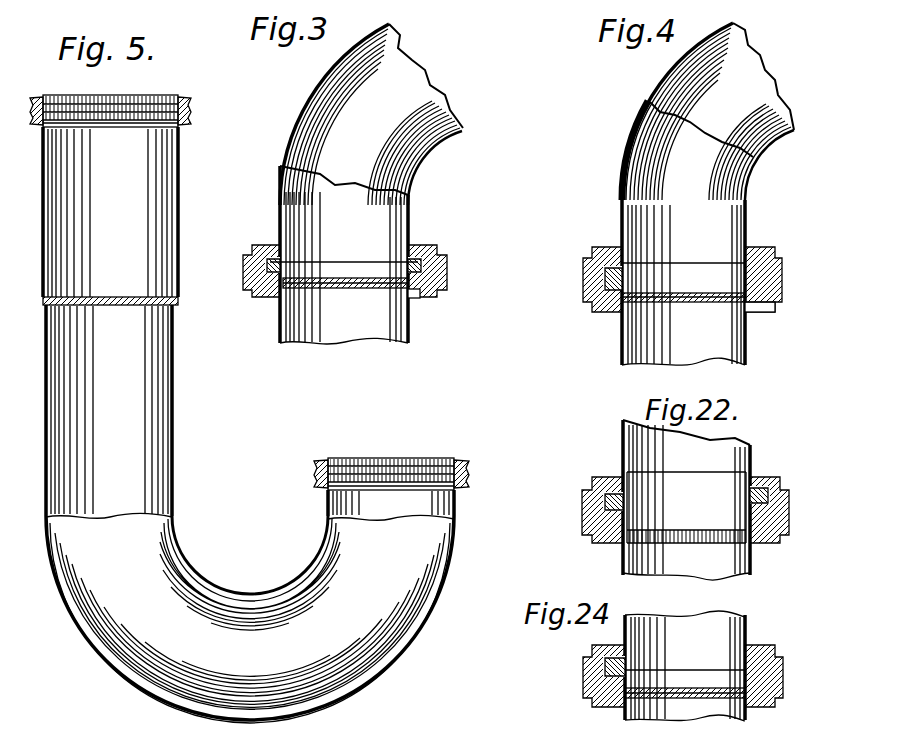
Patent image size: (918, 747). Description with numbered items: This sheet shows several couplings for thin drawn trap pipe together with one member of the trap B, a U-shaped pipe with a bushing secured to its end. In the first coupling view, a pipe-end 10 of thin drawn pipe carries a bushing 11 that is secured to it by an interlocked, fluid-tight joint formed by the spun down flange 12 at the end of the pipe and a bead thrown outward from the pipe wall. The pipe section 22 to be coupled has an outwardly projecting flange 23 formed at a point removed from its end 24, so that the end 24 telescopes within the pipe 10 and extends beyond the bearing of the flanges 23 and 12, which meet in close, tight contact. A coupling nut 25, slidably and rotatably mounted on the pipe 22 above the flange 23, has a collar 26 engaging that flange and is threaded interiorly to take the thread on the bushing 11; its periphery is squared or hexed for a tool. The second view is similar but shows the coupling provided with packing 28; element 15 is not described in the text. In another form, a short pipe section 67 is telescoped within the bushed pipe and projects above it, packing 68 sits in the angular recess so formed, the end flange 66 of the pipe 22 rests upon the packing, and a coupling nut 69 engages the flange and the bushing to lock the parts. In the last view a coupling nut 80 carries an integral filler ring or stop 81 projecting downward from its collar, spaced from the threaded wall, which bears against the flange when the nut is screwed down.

In FIG. 5, the trap B is at (165, 401).
In FIG. 3, the pipe-end 10 is at (352, 338).
In FIG. 4, the pipe-end 10 is at (621, 346).
In FIG. 22, the pipe-end 10 is at (710, 566).
In FIG. 3, the pipe section 22 is at (418, 80).
In FIG. 4, the pipe section 22 is at (737, 190).
In FIG. 22, the pipe section 22 is at (726, 446).
In FIG. 3, the bushing 11 is at (275, 299).
In FIG. 4, the bushing 11 is at (751, 305).
In FIG. 3, the spun down flange 12 is at (436, 262).
In FIG. 3, the lip 15 is at (413, 299).
In FIG. 3, the flange 23 is at (416, 270).
In FIG. 3, the end of the pipe 24 is at (371, 280).
In FIG. 4, the end of the pipe 24 is at (706, 285).
In FIG. 3, the coupling nut 25 is at (452, 279).
In FIG. 4, the coupling nut 25 is at (777, 283).
In FIG. 3, the collar 26 is at (270, 256).
In FIG. 4, the packing 28 is at (606, 276).
In FIG. 22, the end flange 66 is at (760, 490).
In FIG. 22, the short pipe section 67 is at (715, 520).
In FIG. 22, the packing 68 is at (600, 503).
In FIG. 22, the coupling nut 69 is at (586, 522).
In FIG. 24, the coupling nut 80 is at (596, 678).
In FIG. 24, the filler ring or stop 81 is at (604, 665).